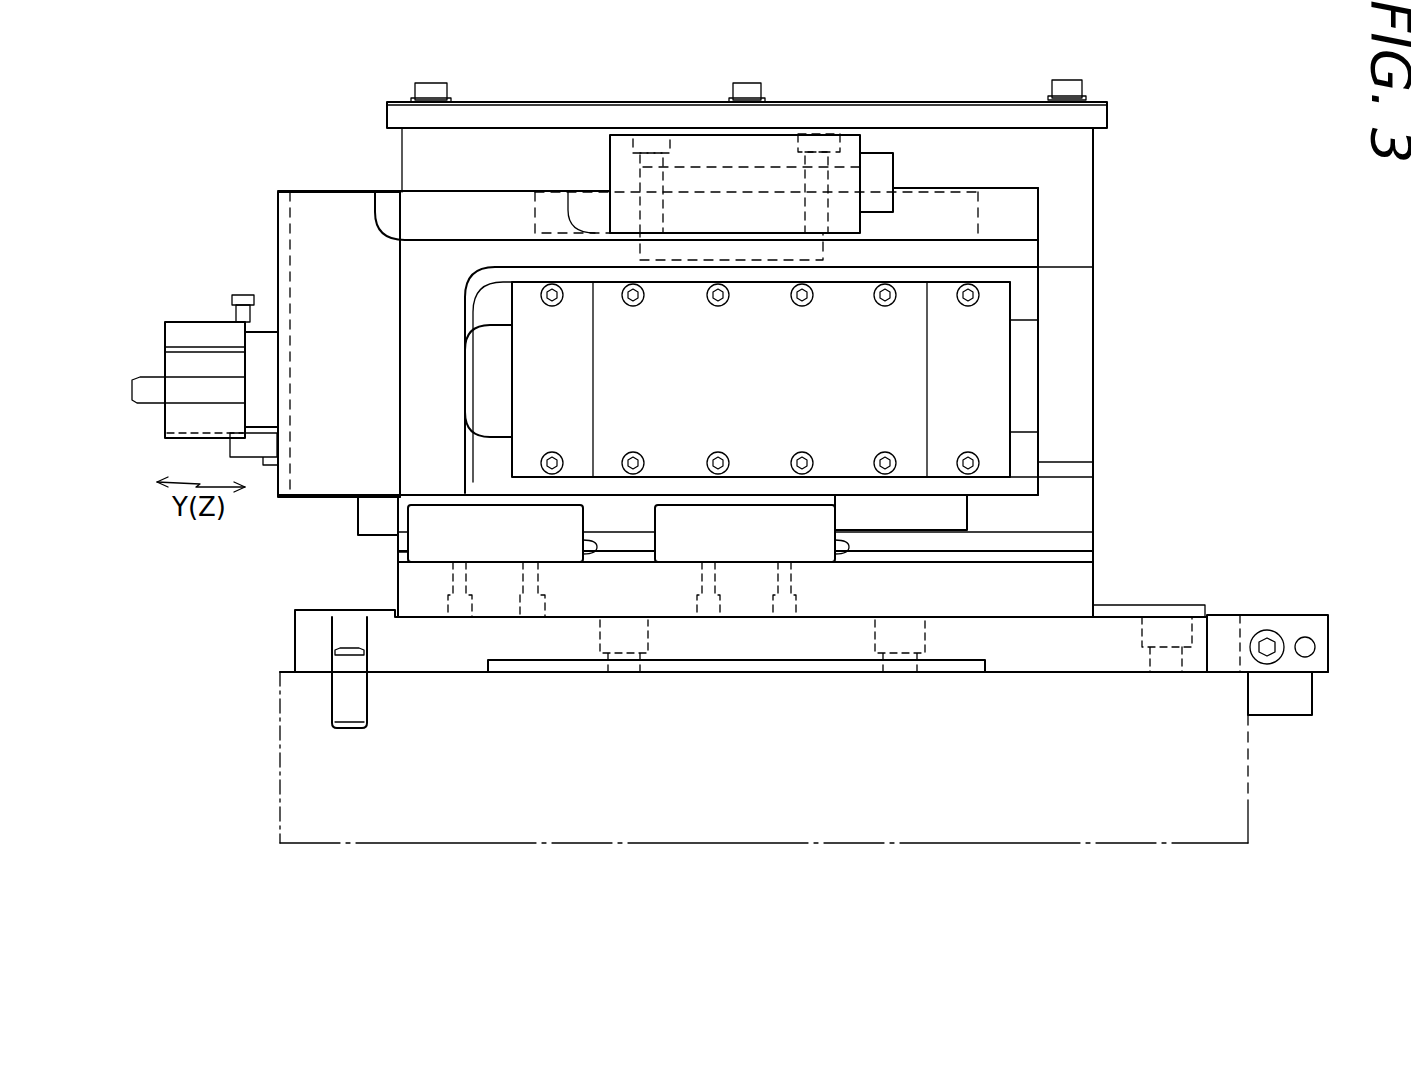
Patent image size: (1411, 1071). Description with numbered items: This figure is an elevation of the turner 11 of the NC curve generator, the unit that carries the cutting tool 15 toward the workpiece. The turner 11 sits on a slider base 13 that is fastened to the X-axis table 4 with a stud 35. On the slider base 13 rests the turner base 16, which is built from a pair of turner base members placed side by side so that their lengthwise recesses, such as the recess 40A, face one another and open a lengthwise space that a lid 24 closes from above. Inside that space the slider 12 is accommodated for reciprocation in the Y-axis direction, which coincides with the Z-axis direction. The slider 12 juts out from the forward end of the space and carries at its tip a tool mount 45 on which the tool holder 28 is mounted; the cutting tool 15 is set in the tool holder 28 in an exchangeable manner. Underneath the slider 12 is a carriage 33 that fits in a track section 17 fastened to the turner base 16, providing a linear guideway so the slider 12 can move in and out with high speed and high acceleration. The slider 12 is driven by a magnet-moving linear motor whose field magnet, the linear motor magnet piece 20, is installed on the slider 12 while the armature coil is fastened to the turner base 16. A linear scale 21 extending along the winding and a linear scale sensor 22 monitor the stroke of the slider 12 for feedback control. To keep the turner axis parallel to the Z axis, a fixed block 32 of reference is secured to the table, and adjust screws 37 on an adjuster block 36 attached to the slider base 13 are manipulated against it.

The X-axis table 4 is at (872, 795).
The turner 11 is at (1104, 362).
The slider 12 is at (340, 272).
The slider base 13 is at (1068, 650).
The cutting tool 15 is at (153, 383).
The turner base 16 is at (1067, 228).
The track section 17 is at (503, 548).
The linear motor magnet piece 20 is at (758, 385).
The linear scale 21 is at (500, 157).
The linear scale sensor 22 is at (697, 152).
The lid 24 is at (890, 112).
The tool holder 28 is at (200, 355).
The fixed block of reference 32 is at (1283, 698).
The carriage 33 is at (925, 512).
The stud 35 is at (347, 704).
The adjuster block 36 is at (1228, 633).
The adjust screws 37 is at (1305, 635).
The lengthwise recess 40A is at (325, 380).
The tool mount 45 is at (265, 350).